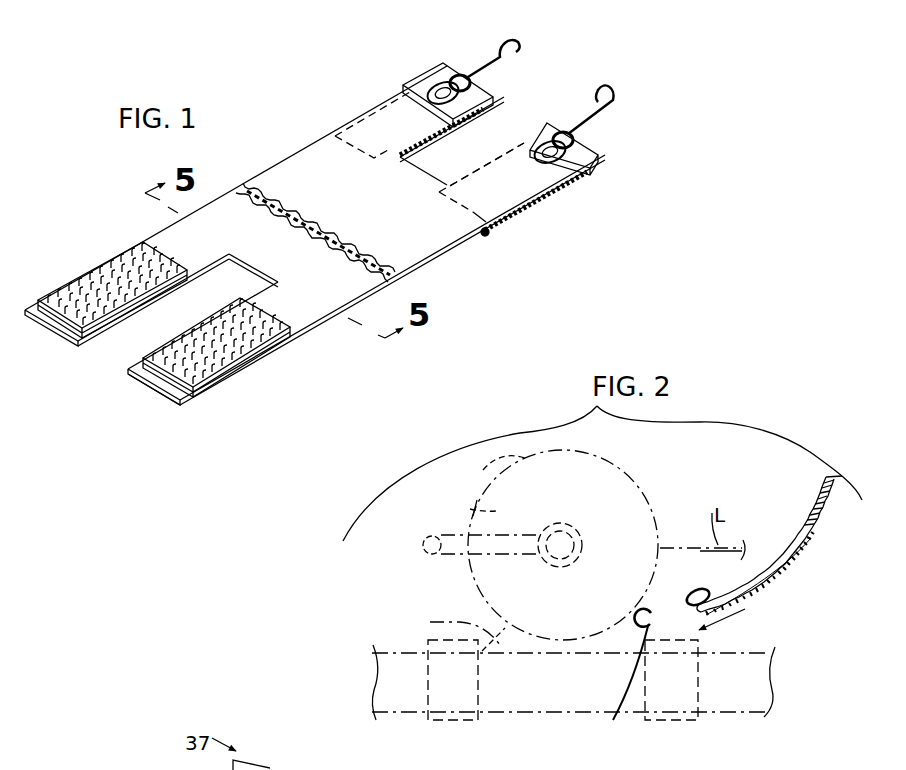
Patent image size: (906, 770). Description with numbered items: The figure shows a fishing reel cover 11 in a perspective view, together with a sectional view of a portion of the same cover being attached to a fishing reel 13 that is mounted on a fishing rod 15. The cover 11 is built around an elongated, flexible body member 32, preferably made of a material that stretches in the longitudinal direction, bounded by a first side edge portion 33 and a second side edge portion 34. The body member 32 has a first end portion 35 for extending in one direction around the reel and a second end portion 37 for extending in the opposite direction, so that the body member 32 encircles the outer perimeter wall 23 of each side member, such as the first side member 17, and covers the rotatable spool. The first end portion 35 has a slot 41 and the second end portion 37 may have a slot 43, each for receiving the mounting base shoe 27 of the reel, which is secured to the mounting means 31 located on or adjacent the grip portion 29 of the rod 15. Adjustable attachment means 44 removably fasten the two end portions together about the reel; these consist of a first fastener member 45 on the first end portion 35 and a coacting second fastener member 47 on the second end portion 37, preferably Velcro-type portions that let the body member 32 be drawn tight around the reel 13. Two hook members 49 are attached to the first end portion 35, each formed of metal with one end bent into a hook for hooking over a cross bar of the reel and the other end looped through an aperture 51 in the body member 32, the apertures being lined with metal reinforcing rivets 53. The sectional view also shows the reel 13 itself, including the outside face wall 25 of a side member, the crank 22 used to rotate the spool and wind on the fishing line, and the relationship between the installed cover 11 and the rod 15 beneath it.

In FIG. 1, the fishing reel cover 11 is at (307, 79).
In FIG. 2, the fishing reel cover 11 is at (799, 586).
In FIG. 2, the fishing reel 13 is at (641, 486).
In FIG. 2, the fishing rod 15 is at (556, 716).
In FIG. 2, the first side member 17 is at (480, 567).
In FIG. 2, the crank 22 is at (423, 547).
In FIG. 2, the outer perimeter wall 23 is at (500, 458).
In FIG. 2, the outside face wall 25 is at (470, 509).
In FIG. 2, the mounting base shoe 27 is at (453, 632).
In FIG. 2, the grip portion 29 is at (416, 712).
In FIG. 2, the mounting means 31 is at (467, 710).
In FIG. 1, the body member 32 is at (428, 243).
In FIG. 2, the body member 32 is at (858, 548).
In FIG. 1, the first side edge portion 33 is at (308, 318).
In FIG. 1, the second side edge portion 34 is at (315, 157).
In FIG. 1, the first end portion 35 is at (602, 128).
In FIG. 2, the first end portion 35 is at (753, 616).
In FIG. 1, the second end portion 37 is at (148, 396).
In FIG. 1, the slot 41 is at (513, 114).
In FIG. 2, the slot 41 is at (766, 564).
In FIG. 1, the slot 43 is at (140, 338).
In FIG. 1, the attachment means 44 is at (79, 272).
In FIG. 2, the attachment means 44 is at (795, 564).
In FIG. 1, the first fastener member 45 is at (460, 140).
In FIG. 2, the first fastener member 45 is at (782, 581).
In FIG. 1, the second fastener member 47 is at (116, 258).
In FIG. 1, the hook member 49 is at (512, 40).
In FIG. 2, the hook member 49 is at (615, 674).
In FIG. 1, the aperture 51 is at (433, 112).
In FIG. 1, the reinforcing rivet 53 is at (444, 88).
In FIG. 2, the reinforcing rivet 53 is at (720, 591).